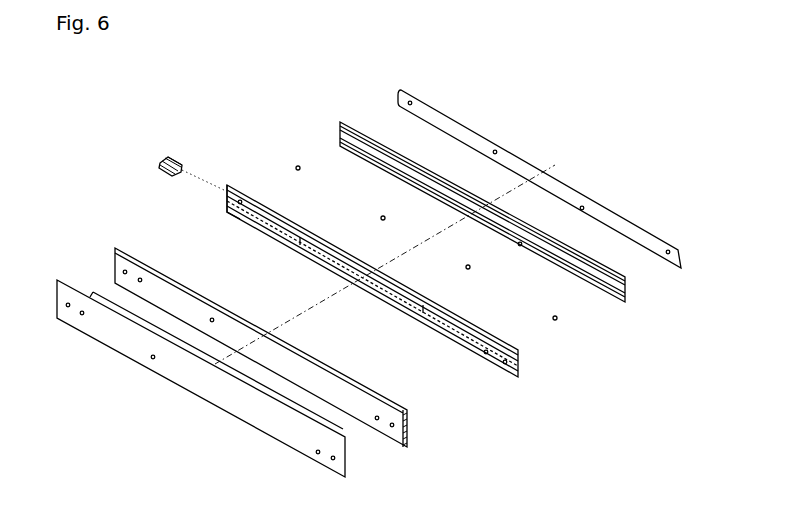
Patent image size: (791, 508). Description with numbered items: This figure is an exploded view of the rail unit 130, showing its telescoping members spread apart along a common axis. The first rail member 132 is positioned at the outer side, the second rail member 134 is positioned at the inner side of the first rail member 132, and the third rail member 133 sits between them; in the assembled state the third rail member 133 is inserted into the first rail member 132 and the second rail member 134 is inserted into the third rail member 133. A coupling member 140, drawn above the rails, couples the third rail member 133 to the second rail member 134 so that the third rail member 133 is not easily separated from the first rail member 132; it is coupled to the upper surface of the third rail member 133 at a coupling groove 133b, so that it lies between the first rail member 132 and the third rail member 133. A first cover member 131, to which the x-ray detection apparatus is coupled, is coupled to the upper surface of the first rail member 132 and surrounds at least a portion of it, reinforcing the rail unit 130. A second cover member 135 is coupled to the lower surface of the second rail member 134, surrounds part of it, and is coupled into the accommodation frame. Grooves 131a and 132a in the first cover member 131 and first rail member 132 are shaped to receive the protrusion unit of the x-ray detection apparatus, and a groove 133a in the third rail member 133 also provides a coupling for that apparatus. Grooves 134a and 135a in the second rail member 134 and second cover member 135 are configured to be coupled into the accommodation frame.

The rail unit 130 is at (241, 77).
The first cover member 131 is at (321, 455).
The groove 131a is at (247, 408).
The first rail member 132 is at (404, 439).
The groove 132a is at (378, 421).
The third rail member 133 is at (505, 368).
The groove 133a is at (486, 354).
The coupling groove 133b is at (228, 197).
The second rail member 134 is at (627, 299).
The groove 134a is at (520, 246).
The second cover member 135 is at (683, 268).
The groove 135a is at (582, 210).
The coupling member 140 is at (176, 152).